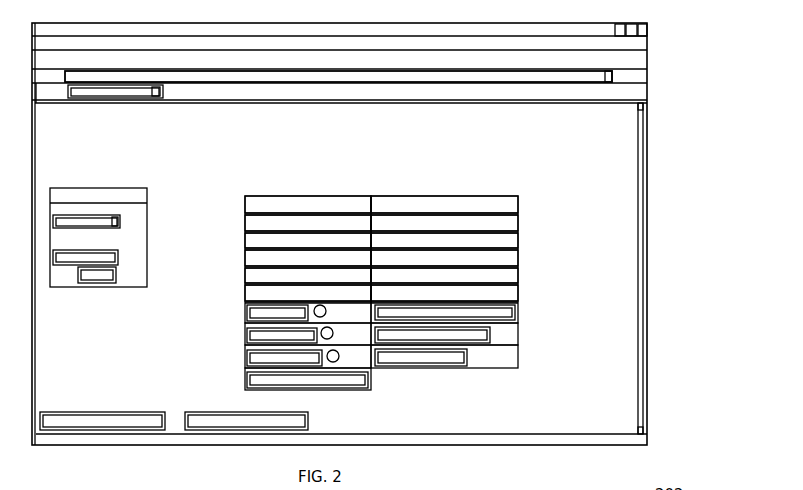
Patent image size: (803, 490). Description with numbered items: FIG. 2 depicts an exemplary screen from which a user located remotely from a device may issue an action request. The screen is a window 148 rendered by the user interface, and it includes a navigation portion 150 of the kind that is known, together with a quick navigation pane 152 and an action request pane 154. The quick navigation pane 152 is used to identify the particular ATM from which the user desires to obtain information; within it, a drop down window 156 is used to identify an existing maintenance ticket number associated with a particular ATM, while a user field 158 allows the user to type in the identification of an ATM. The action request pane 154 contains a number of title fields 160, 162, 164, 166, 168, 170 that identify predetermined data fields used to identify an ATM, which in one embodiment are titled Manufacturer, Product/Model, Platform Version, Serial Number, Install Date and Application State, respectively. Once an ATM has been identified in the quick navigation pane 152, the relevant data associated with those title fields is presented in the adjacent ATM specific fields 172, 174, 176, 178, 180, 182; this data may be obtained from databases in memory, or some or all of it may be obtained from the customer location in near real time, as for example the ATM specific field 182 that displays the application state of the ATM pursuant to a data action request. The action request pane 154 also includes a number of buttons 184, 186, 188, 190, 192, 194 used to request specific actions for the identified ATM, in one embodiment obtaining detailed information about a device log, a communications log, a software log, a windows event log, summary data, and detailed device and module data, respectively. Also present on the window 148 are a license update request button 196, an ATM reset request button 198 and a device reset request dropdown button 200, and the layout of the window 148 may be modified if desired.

The window 148 is at (630, 20).
The navigation portion 150 is at (647, 70).
The quick navigation pane 152 is at (176, 157).
The action request pane 154 is at (539, 159).
The drop down window 156 is at (110, 217).
The user field 158 is at (68, 263).
The title field 160 is at (245, 197).
The title field 162 is at (245, 215).
The title field 164 is at (245, 233).
The title field 166 is at (245, 250).
The title field 168 is at (245, 268).
The title field 170 is at (245, 285).
The ATM specific field 172 is at (518, 197).
The ATM specific field 174 is at (518, 222).
The ATM specific field 176 is at (515, 240).
The ATM specific field 178 is at (518, 253).
The ATM specific field 180 is at (518, 275).
The ATM specific field 182 is at (518, 298).
The button 184 is at (245, 312).
The button 186 is at (245, 335).
The button 188 is at (245, 355).
The button 190 is at (245, 380).
The button 192 is at (518, 330).
The button 194 is at (485, 345).
The license update request button 196 is at (457, 370).
The ATM reset request button 198 is at (93, 410).
The device reset request dropdown button 200 is at (310, 422).